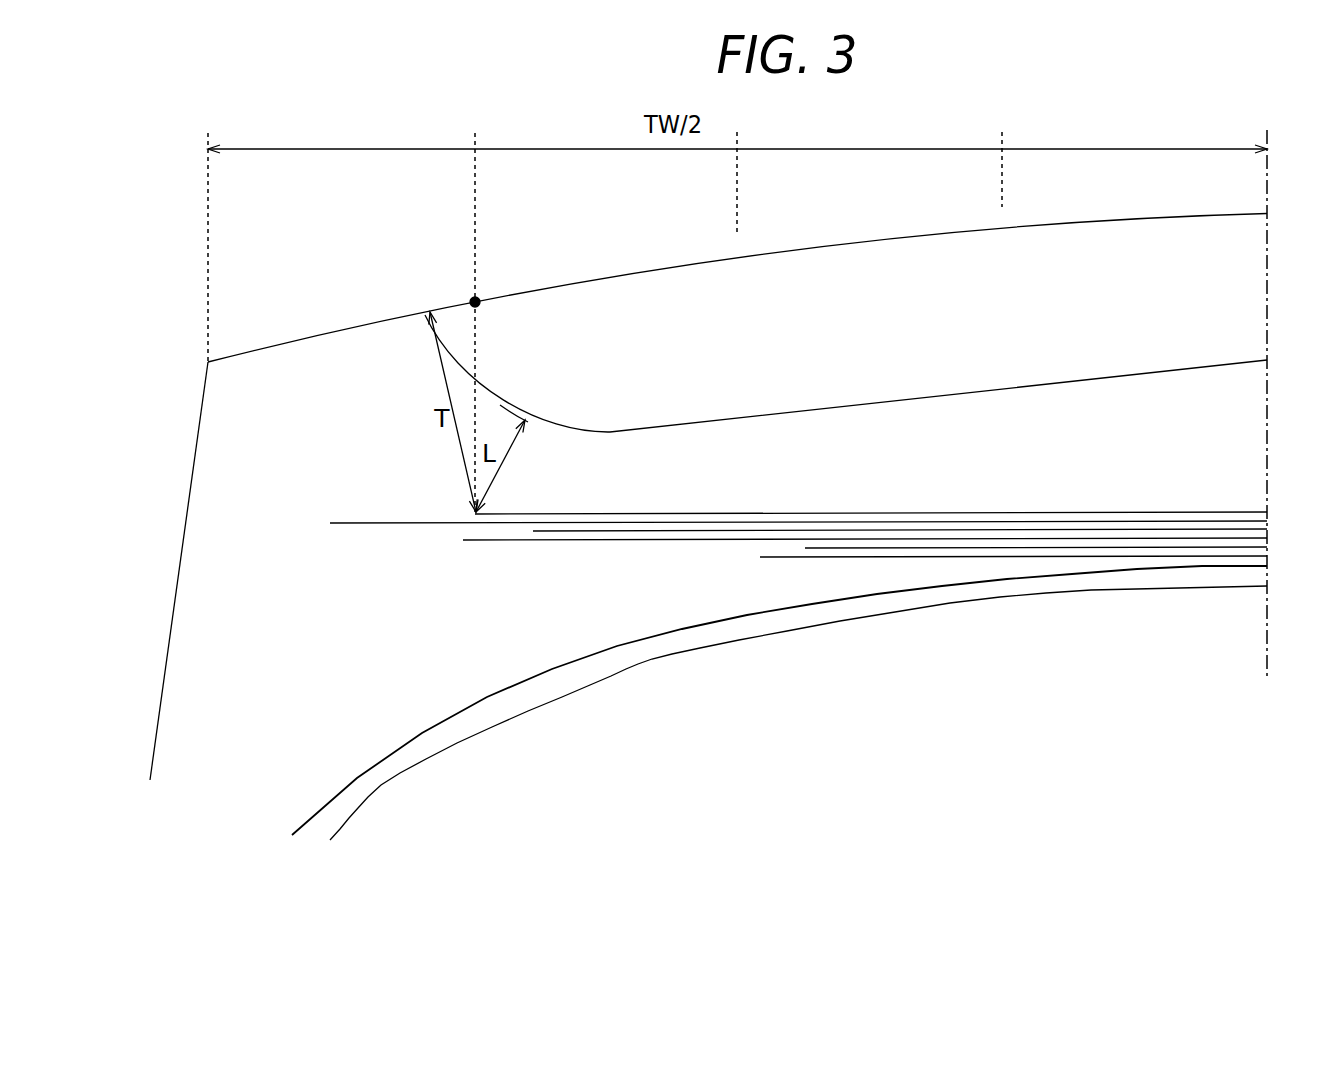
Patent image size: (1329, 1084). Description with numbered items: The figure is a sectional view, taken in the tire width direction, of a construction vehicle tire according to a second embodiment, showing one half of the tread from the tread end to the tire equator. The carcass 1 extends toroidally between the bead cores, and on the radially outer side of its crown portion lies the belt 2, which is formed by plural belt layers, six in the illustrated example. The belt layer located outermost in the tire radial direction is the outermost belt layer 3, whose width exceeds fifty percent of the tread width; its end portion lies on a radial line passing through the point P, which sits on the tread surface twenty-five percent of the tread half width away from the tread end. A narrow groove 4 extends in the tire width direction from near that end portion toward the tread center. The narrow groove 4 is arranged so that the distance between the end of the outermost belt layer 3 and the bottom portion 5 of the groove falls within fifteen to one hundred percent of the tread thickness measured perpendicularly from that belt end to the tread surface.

The carcass 1 is at (578, 657).
The belt 2 is at (1283, 503).
The outermost belt layer 3 is at (535, 513).
The narrow groove 4 is at (479, 388).
The bottom portion of the narrow groove 5 is at (528, 425).
The point P is at (479, 299).